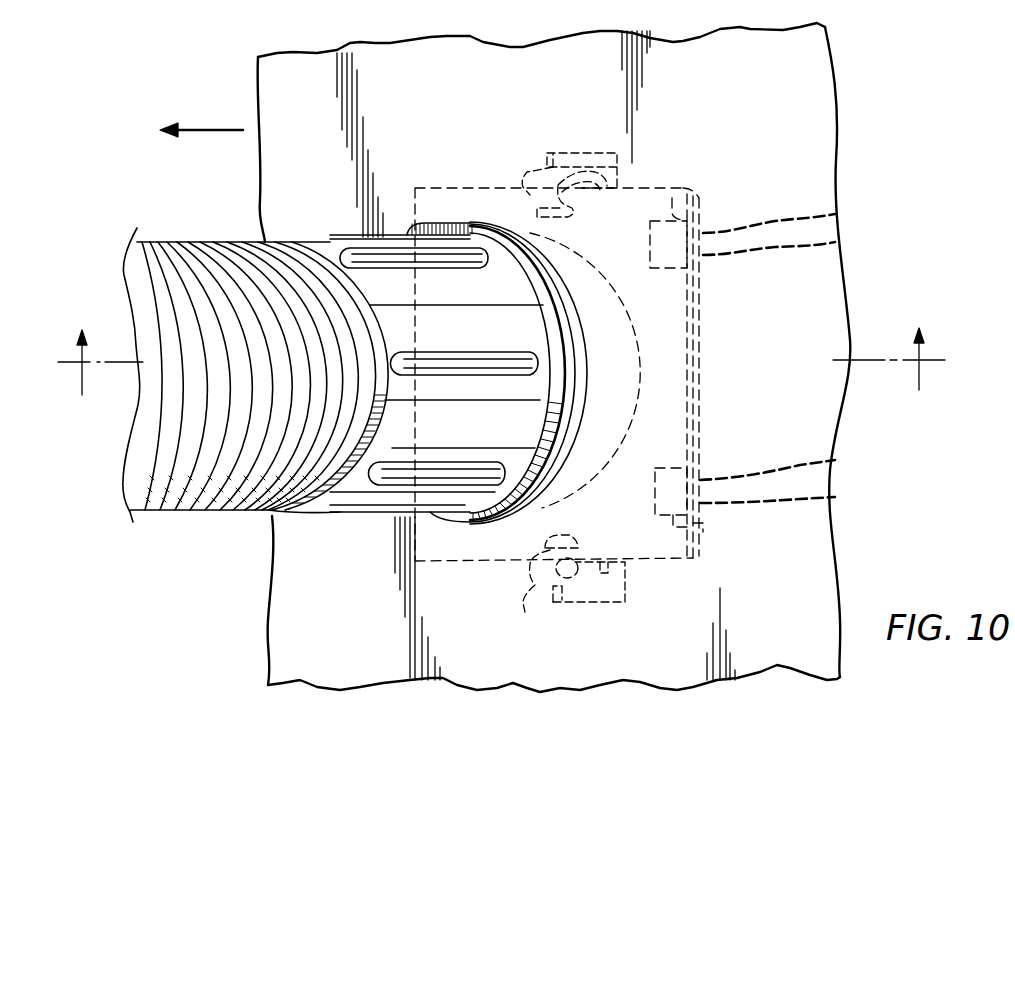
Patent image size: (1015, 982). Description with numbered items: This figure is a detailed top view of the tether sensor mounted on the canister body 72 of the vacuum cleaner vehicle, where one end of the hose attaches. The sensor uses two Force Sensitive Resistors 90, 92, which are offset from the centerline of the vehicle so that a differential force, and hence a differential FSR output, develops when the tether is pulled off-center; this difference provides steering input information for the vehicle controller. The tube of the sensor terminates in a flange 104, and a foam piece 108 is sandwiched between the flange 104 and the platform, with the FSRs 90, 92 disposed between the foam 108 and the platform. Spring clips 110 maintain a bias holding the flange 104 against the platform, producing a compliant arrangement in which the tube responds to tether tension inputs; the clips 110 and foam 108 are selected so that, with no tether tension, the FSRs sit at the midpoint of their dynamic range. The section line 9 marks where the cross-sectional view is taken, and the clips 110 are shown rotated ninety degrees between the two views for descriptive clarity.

The canister body 72 is at (792, 622).
The force sensitive resistor 90 is at (674, 190).
The force sensitive resistor 92 is at (708, 527).
The flange 104 is at (672, 440).
The foam piece 108 is at (703, 292).
The clips 110 is at (573, 162).
The section line 9- 9 is at (501, 348).